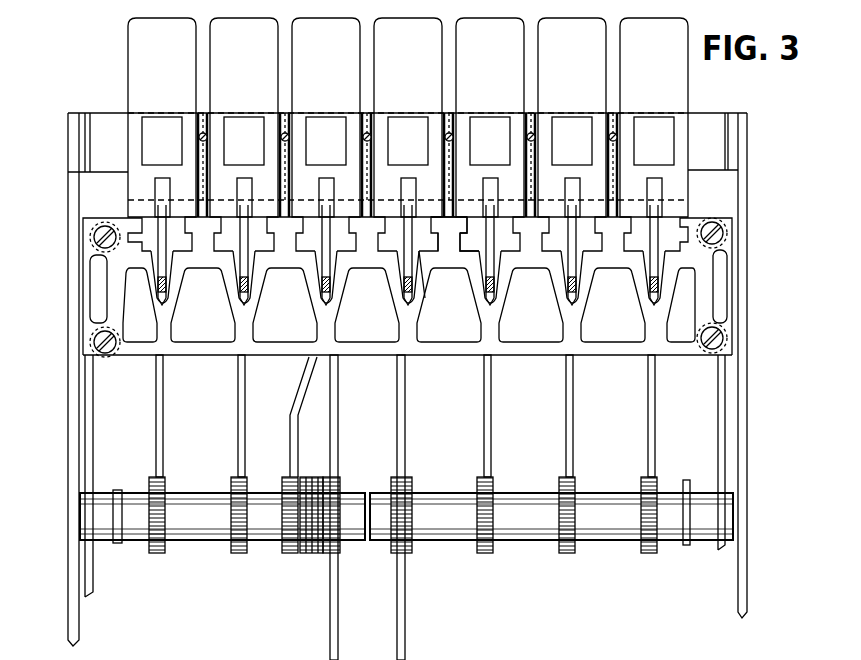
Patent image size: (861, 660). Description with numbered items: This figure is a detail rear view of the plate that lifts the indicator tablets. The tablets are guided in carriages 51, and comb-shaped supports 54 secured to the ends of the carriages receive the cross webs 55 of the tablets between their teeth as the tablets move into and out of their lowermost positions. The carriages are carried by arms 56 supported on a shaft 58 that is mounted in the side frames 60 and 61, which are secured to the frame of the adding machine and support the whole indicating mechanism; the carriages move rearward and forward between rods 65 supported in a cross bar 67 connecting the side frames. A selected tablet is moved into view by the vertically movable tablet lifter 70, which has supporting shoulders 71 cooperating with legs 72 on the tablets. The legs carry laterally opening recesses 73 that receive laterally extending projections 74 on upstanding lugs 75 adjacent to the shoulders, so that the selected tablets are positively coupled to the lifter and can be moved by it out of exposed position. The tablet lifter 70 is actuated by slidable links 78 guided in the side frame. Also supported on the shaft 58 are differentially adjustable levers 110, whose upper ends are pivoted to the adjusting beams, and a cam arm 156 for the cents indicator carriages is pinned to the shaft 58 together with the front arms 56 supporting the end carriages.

The carriage 51 is at (692, 118).
The comb-shaped support 54 is at (649, 265).
The cross web 55 is at (653, 172).
The arm 56 is at (161, 433).
The shaft 58 is at (735, 492).
The side frame 60 is at (72, 442).
The side frame 61 is at (741, 402).
The rod 65 is at (207, 136).
The cross bar 67 is at (108, 117).
The tablet lifter 70 is at (443, 353).
The supporting shoulder 71 is at (450, 240).
The leg 72 is at (479, 227).
The recess 73 is at (476, 224).
The projection 74 is at (437, 219).
The upstanding lug 75 is at (432, 254).
The slidable link 78 is at (93, 422).
The differentially adjustable lever 110 is at (397, 430).
The cam arm 156 is at (329, 606).